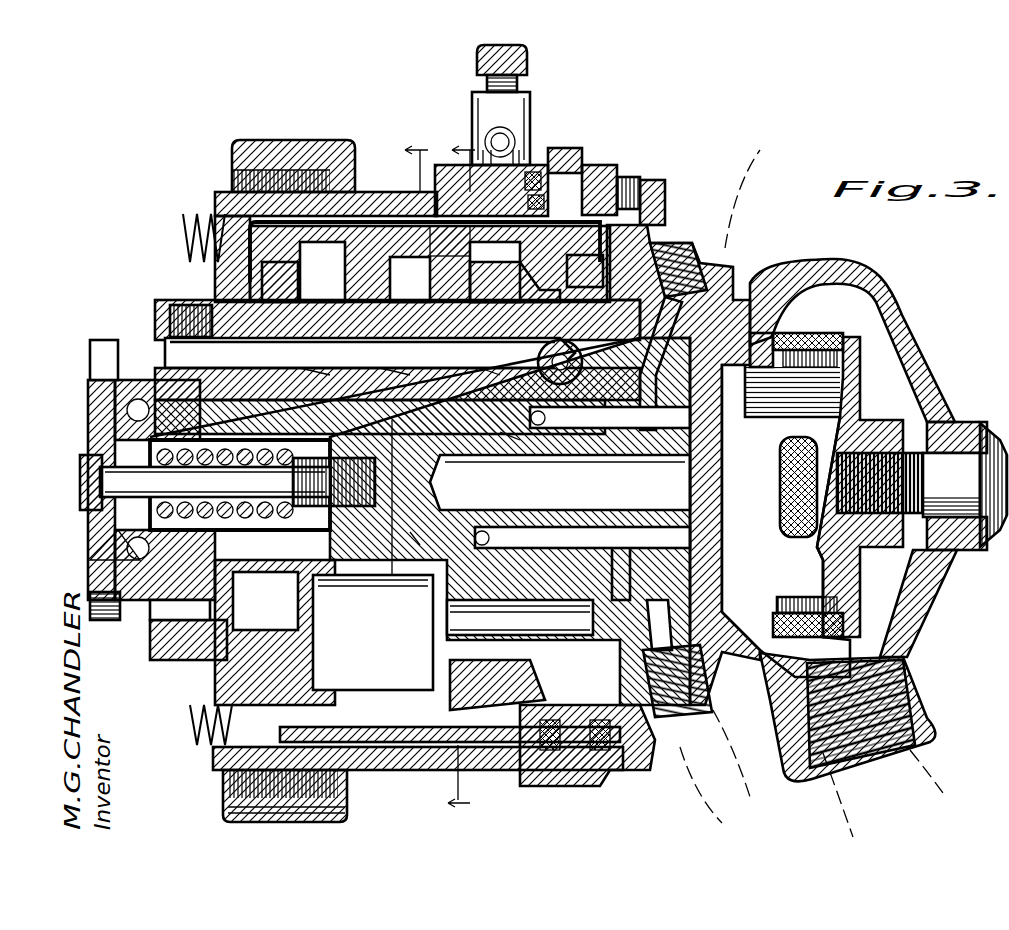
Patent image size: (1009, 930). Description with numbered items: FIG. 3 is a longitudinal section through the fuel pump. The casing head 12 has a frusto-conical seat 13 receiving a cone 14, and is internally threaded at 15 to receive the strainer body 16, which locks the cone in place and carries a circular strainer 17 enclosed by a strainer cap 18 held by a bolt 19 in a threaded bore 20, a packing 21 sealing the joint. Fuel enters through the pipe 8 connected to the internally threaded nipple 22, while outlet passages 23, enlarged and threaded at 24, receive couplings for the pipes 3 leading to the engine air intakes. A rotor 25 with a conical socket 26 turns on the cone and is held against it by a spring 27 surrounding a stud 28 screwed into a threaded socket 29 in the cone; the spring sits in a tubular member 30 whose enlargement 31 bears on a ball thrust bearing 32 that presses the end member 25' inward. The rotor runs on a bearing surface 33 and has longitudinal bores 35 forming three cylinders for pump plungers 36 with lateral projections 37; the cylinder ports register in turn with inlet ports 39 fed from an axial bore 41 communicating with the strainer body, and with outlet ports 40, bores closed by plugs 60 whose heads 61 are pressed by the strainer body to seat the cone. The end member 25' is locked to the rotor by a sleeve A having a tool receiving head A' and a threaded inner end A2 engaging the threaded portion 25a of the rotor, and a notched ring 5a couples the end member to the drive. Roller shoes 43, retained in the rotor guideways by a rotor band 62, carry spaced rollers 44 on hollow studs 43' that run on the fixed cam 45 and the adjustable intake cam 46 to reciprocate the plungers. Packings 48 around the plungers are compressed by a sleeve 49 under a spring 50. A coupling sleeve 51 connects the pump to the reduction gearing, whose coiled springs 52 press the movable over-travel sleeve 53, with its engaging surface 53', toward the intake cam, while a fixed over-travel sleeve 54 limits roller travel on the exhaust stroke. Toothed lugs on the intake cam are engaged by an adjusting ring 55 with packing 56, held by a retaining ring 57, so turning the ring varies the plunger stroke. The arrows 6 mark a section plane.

The pipes 3 is at (738, 475).
The ring 5a is at (96, 355).
The section arrow 6 is at (452, 487).
The pipe 8 is at (883, 793).
The head 12 is at (700, 735).
The frusto-conical seat 13 is at (742, 290).
The cone 14 is at (420, 521).
The internal threads 15 is at (780, 333).
The strainer body 16 is at (738, 598).
The circular strainer 17 is at (820, 640).
The strainer cap 18 is at (920, 610).
The bolt 19 is at (965, 485).
The threaded bore 20 is at (885, 515).
The packing 21 is at (752, 690).
The internally threaded nipple 22 is at (905, 702).
The outlet passages 23 is at (680, 290).
The enlarged threaded portion 24 is at (682, 300).
The rotor 25 is at (380, 416).
The threaded portion 25a is at (275, 632).
The end member 25' is at (171, 646).
The conical socket 26 is at (414, 526).
The spring 27 is at (82, 462).
The stud 28 is at (229, 485).
The threaded socket 29 is at (237, 482).
The tubular member 30 is at (100, 440).
The enlarged portion 31 is at (90, 406).
The ball thrust bearing 32 is at (92, 378).
The bearing surface 33 is at (505, 425).
The longitudinal bores 35 is at (475, 357).
The pump plungers 36 is at (370, 353).
The lateral projections 37 is at (300, 258).
The inlet ports 39 is at (568, 484).
The outlet ports 40 is at (560, 415).
The axial bore 41 is at (560, 482).
The shoes 43 is at (357, 180).
The hollow studs 43' is at (484, 199).
The rollers 44 is at (252, 290).
The fixed cam 45 is at (222, 272).
The adjustable cam 46 is at (562, 148).
The packings 48 is at (391, 357).
The sleeve 49 is at (311, 357).
The spring 50 is at (155, 320).
The coupling sleeve 51 is at (270, 152).
The coiled springs 52 is at (182, 232).
The movable over-travel sleeve 53 is at (410, 187).
The engaging surface 53' is at (191, 225).
The fixed over-travel sleeve 54 is at (515, 272).
The adjusting ring 55 is at (598, 172).
The packing 56 is at (630, 185).
The retaining ring 57 is at (655, 212).
The plugs 60 is at (722, 420).
The heads 61 is at (730, 522).
The rotor band 62 is at (404, 220).
The sleeve A is at (118, 620).
The tool receiving head A' is at (84, 533).
The threaded inner end A2 is at (373, 632).